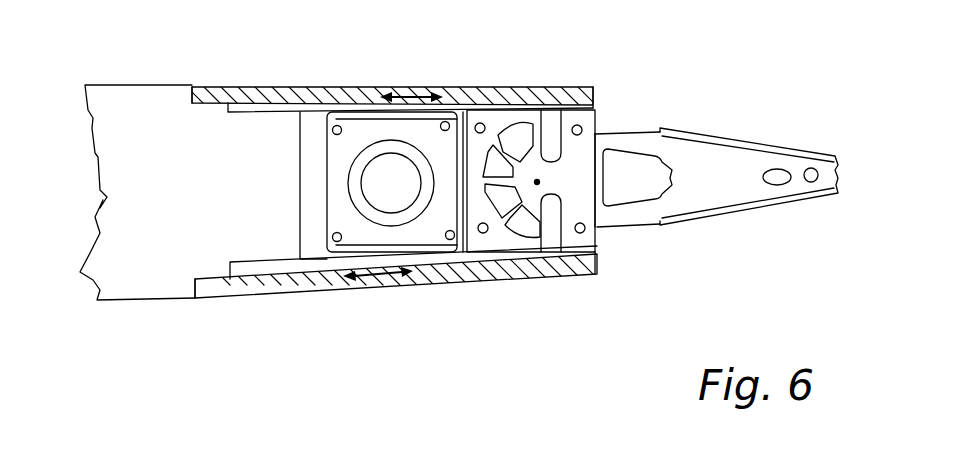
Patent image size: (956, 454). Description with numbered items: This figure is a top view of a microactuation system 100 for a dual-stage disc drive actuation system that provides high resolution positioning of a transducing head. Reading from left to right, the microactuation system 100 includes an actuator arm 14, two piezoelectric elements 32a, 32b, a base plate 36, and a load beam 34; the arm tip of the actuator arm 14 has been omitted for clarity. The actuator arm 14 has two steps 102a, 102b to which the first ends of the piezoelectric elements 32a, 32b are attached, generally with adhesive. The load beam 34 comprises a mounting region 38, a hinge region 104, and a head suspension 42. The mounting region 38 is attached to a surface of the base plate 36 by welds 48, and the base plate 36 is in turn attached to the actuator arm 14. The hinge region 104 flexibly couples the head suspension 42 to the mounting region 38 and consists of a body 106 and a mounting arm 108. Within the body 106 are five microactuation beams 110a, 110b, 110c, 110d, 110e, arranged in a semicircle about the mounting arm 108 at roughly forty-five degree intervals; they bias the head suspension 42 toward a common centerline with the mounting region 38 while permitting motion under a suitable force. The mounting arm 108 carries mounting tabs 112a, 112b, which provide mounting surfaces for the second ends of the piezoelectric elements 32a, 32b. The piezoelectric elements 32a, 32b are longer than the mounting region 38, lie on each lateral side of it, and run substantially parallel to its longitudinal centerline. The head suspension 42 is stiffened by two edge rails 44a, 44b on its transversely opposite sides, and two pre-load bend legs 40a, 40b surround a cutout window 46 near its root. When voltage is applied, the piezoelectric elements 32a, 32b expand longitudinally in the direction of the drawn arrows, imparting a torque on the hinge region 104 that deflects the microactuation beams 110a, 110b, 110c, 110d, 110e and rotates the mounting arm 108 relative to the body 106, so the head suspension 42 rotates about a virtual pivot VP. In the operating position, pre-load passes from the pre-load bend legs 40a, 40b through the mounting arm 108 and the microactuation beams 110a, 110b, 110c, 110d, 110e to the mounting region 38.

The microactuation system 100 is at (112, 67).
The actuator arm 14 is at (115, 107).
The step 102a is at (203, 117).
The step 102b is at (212, 284).
The piezoelectric element 32a is at (213, 93).
The piezoelectric element 32b is at (250, 283).
The load beam 34 is at (564, 82).
The base plate 36 is at (336, 264).
The mounting region 38 is at (370, 133).
The welds 48 is at (337, 130).
The hinge region 104 is at (500, 117).
The body 106 is at (500, 256).
The microactuation beam 110a is at (522, 128).
The microactuation beam 110b is at (502, 153).
The microactuation beam 110c is at (440, 258).
The microactuation beam 110d is at (533, 254).
The microactuation beam 110e is at (554, 252).
The mounting tab 112a is at (582, 117).
The mounting tab 112b is at (593, 267).
The virtual pivot VP is at (537, 182).
The pre-load bend leg 40a is at (603, 130).
The pre-load bend leg 40b is at (643, 213).
The head suspension 42 is at (743, 170).
The edge rail 44a is at (687, 130).
The edge rail 44b is at (775, 202).
The cutout window 46 is at (637, 177).
The mounting arm 108 is at (610, 180).